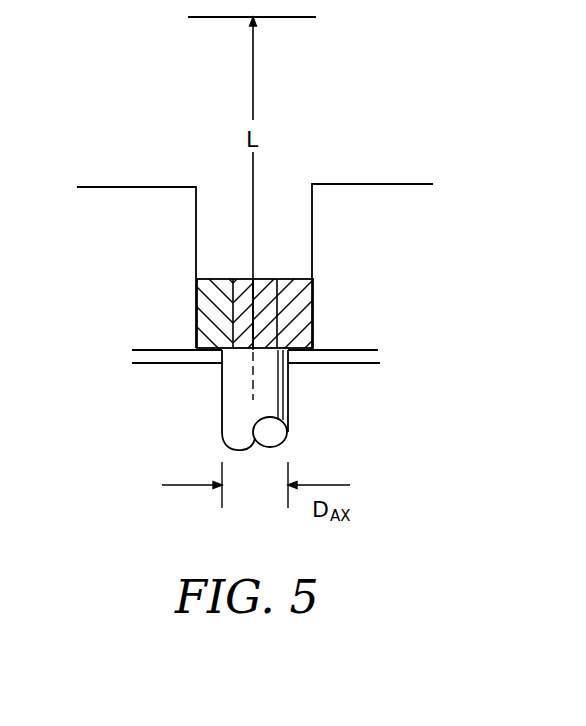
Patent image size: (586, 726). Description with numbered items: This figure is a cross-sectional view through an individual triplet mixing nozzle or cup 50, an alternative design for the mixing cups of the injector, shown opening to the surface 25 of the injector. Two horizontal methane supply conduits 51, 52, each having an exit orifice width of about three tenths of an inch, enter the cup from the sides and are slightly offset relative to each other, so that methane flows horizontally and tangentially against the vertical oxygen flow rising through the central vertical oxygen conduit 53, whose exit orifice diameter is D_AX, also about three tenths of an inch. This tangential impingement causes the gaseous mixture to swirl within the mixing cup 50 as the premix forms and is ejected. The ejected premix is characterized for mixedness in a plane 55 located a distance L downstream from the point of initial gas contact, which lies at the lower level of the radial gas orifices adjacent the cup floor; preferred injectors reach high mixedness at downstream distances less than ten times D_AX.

The surface of the injector 25 is at (127, 180).
The triplet mixing nozzle or cup 50 is at (277, 181).
The horizontal methane supply conduit 51 is at (311, 306).
The horizontal methane supply conduit 52 is at (166, 295).
The central vertical oxygen conduit 53 is at (286, 393).
The plane 55 is at (332, 19).